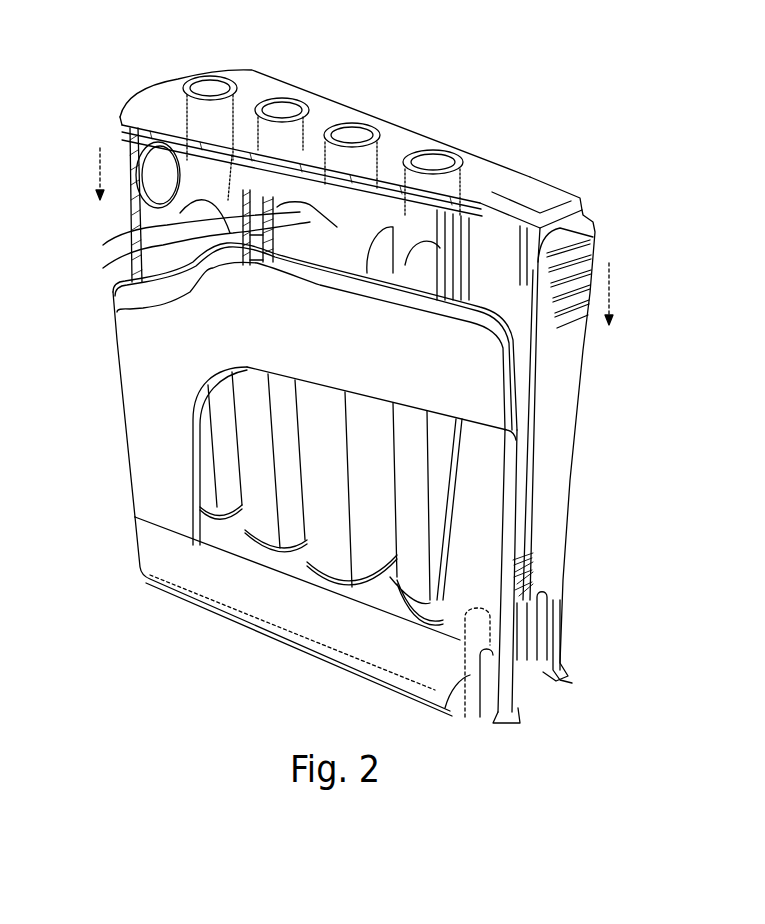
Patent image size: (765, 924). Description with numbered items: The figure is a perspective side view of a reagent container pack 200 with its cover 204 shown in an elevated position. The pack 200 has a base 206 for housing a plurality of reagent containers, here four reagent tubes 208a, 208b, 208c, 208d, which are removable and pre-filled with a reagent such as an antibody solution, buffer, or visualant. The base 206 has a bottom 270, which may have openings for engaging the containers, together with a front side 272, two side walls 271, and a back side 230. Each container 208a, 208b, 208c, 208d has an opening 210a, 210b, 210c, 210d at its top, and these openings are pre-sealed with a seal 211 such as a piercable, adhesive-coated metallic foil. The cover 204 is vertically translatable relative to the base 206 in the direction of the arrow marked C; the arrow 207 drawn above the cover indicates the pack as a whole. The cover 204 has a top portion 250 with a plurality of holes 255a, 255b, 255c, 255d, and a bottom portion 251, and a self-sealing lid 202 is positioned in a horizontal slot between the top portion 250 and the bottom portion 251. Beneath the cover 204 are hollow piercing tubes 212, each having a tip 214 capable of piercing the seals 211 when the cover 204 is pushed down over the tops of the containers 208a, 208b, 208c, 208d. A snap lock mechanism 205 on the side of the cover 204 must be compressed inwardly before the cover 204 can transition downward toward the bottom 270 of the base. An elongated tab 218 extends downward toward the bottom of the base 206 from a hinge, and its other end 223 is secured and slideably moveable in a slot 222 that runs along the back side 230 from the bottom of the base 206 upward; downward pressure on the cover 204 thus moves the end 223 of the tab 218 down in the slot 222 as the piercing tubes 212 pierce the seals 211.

The reagent container pack 200 is at (443, 86).
The self-sealing lid 202 is at (122, 128).
The cover 204 is at (330, 104).
The snap lock mechanism 205 is at (250, 284).
The base 206 is at (490, 378).
The top plate insertion direction 207 is at (186, 72).
The reagent container 208a is at (207, 467).
The reagent container 208b is at (243, 530).
The reagent container 208c is at (323, 560).
The reagent container 208d is at (390, 583).
The opening 210a is at (232, 155).
The opening 210b is at (247, 262).
The opening 210c is at (377, 227).
The opening 210d is at (425, 245).
The seal 211 is at (138, 267).
The hollow piercing tube 212 is at (172, 126).
The tip 214 is at (130, 215).
The elongated tab 218 is at (568, 410).
The slot 222 is at (447, 703).
The end of elongated tab 223 is at (470, 617).
The back side 230 is at (490, 710).
The top portion of the cover 250 is at (163, 83).
The bottom portion of the cover 251 is at (127, 228).
The hole 255a is at (217, 86).
The hole 255b is at (283, 108).
The hole 255c is at (360, 130).
The hole 255d is at (447, 160).
The bottom 270 is at (273, 627).
The side wall 271 is at (172, 427).
The front side 272 is at (110, 357).